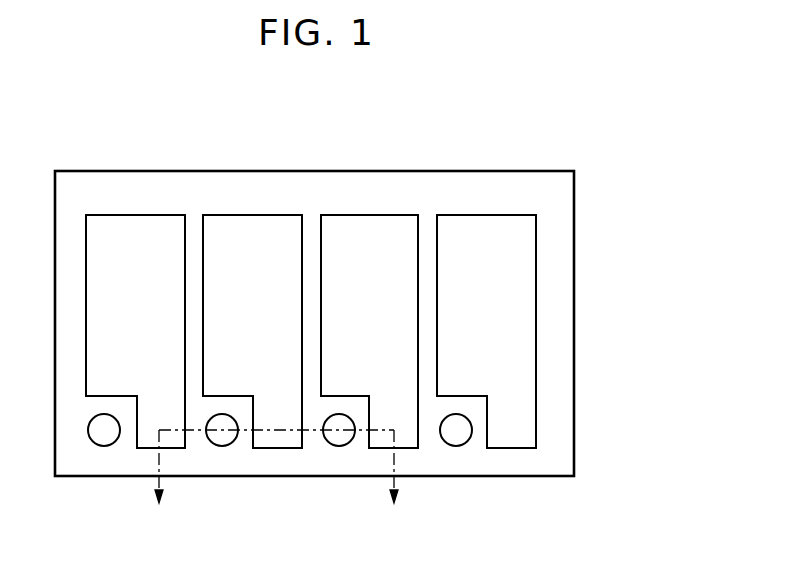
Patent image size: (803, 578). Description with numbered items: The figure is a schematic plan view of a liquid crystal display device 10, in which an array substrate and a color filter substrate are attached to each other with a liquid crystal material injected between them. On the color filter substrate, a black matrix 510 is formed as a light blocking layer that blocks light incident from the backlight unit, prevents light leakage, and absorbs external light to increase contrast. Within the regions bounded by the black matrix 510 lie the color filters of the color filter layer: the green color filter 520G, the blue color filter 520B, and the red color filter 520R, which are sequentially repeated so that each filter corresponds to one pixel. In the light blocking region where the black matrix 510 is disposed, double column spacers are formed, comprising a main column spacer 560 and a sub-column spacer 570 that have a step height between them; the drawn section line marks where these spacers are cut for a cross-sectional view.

The liquid crystal display device 10 is at (599, 167).
The black matrix 510 is at (574, 413).
The green color filter 520G is at (137, 215).
The blue color filter 520B is at (253, 215).
The red color filter 520R is at (372, 215).
The main column spacer 560 is at (222, 442).
The sub-column spacer 570 is at (339, 442).